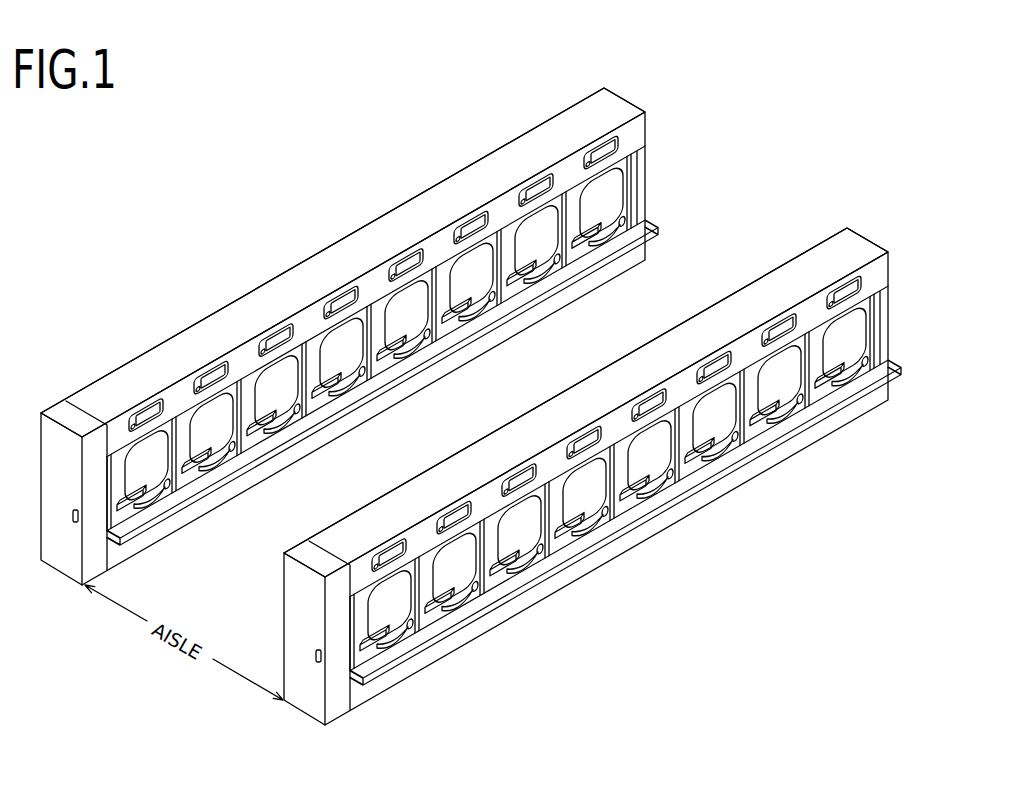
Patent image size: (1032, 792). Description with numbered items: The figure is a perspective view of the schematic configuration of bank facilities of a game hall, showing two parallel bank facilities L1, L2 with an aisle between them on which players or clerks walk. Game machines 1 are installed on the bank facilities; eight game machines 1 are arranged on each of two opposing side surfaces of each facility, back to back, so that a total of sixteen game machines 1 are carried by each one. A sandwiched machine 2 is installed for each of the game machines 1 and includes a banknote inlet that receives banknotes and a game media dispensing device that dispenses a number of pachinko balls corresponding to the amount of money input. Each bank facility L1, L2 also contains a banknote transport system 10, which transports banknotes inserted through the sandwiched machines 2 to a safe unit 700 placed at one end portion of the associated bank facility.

The game machine 1 is at (388, 293).
The sandwiched machine 2 is at (308, 347).
The banknote transport system 10 is at (137, 377).
The safe unit 700 is at (67, 413).
The bank facility L1 is at (645, 70).
The bank facility L2 is at (882, 209).